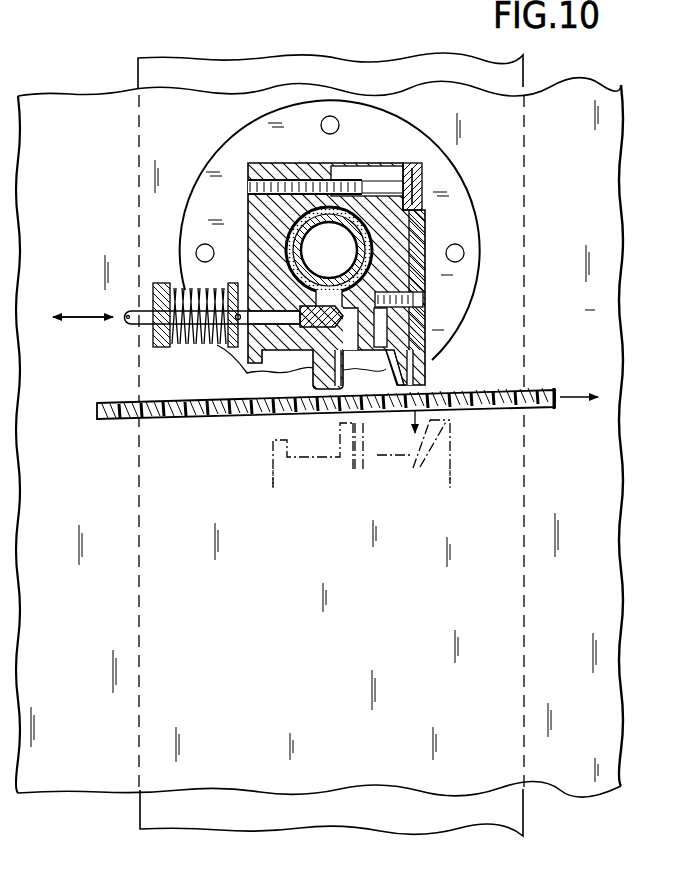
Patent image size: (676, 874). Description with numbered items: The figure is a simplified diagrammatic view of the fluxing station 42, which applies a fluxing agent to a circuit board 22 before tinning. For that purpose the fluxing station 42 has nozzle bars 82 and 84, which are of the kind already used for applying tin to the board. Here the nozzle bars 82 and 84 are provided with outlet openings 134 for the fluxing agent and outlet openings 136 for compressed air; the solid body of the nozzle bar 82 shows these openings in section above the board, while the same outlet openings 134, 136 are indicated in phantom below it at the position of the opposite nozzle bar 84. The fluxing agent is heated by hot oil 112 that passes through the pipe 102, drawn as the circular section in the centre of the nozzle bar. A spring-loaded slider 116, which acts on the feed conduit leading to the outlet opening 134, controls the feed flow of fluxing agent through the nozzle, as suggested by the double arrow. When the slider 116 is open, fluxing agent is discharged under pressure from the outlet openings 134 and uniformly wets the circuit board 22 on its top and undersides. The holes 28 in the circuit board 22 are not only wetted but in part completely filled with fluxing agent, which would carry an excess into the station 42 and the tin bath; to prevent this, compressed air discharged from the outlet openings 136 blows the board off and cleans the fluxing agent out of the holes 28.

The circuit board 22 is at (538, 386).
The holes 28 is at (130, 420).
The fluxing station 42 is at (128, 838).
The nozzle bar 82 is at (213, 146).
The nozzle bar 84 is at (247, 469).
The pipe 102 is at (394, 217).
The hot oil 112 is at (340, 265).
The slider 116 is at (252, 353).
The outlet openings 134 is at (347, 314).
The outlet openings 136 is at (426, 370).